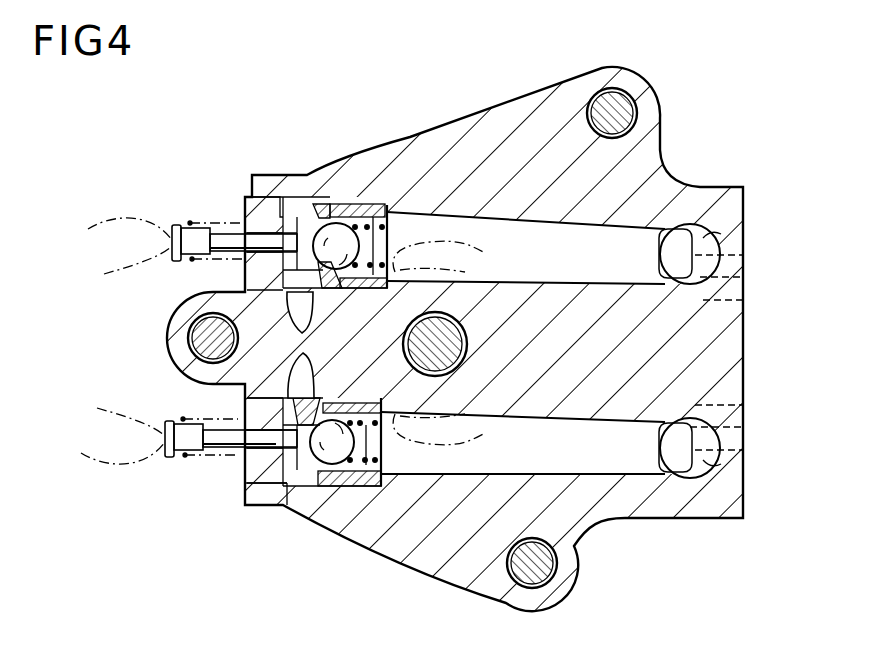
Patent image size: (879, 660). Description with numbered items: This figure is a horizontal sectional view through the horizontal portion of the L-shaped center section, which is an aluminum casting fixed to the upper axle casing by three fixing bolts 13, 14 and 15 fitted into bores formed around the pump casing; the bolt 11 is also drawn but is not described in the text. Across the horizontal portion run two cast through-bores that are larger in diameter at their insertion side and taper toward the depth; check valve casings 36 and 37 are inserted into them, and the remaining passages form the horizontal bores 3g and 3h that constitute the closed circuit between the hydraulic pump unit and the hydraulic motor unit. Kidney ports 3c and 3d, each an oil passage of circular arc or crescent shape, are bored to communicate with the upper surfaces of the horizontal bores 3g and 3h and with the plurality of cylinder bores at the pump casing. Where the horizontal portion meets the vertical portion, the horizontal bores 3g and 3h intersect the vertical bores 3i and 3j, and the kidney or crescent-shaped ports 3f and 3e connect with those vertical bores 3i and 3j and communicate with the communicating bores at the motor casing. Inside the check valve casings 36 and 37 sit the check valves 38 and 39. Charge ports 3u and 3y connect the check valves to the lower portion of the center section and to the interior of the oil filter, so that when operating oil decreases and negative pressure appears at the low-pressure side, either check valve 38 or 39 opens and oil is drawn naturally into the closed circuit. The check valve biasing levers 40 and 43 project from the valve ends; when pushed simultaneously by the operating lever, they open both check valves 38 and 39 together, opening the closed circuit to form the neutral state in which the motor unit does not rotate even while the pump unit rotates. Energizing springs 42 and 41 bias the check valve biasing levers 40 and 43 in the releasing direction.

The kidney port 3c is at (508, 282).
The kidney port 3d is at (500, 436).
The kidney port 3e is at (733, 430).
The kidney port 3f is at (742, 270).
The horizontal bore 3g is at (656, 254).
The horizontal bore 3h is at (660, 448).
The vertical bore 3i is at (703, 235).
The vertical bore 3j is at (715, 463).
The charge port 3u is at (288, 322).
The charge port 3y is at (303, 396).
The bolt hole 11 is at (448, 355).
The fixing bolt 13 is at (195, 342).
The fixing bolt 14 is at (540, 580).
The fixing bolt 15 is at (628, 112).
The check valve casing 36 is at (245, 203).
The check valve casing 37 is at (238, 475).
The check valve 38 is at (319, 240).
The check valve 39 is at (325, 464).
The check valve biasing lever 40 is at (196, 228).
The energizing spring 41 is at (187, 422).
The energizing spring 42 is at (195, 262).
The check valve biasing lever 43 is at (190, 462).